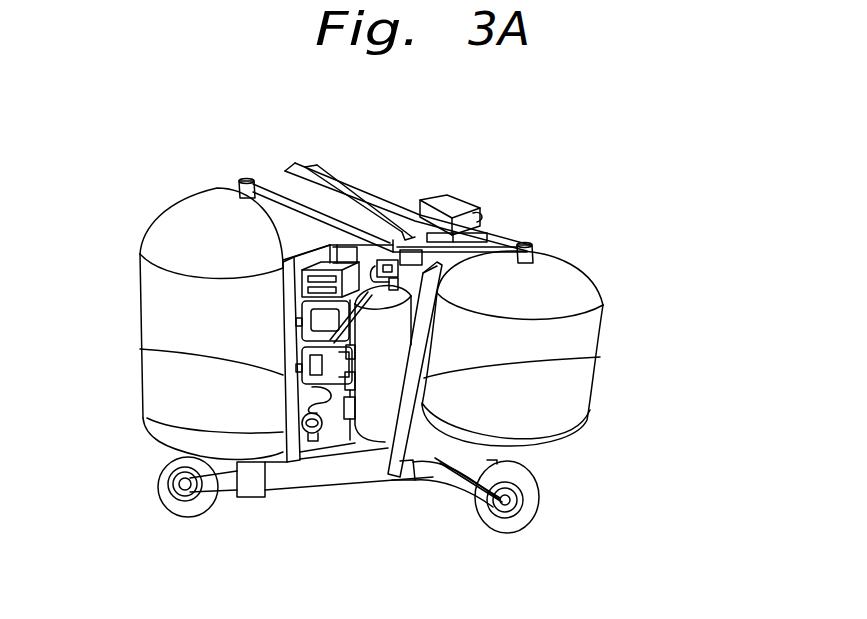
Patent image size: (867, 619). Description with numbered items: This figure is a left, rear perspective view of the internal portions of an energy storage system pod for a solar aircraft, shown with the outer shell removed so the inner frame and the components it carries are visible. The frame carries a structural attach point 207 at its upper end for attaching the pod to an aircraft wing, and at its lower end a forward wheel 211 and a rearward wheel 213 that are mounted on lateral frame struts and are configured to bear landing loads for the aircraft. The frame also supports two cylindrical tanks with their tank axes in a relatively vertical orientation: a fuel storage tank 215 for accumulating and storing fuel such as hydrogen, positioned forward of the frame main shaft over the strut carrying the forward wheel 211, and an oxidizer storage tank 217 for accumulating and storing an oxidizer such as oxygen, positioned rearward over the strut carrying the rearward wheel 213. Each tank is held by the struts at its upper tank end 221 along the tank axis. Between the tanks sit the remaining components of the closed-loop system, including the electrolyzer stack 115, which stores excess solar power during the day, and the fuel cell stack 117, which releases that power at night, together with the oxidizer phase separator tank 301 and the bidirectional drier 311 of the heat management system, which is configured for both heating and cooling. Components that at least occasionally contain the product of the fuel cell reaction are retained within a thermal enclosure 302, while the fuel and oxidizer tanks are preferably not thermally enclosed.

The electrolyzer stack 115 is at (330, 432).
The fuel cell stack 117 is at (333, 247).
The structural attach point 207 is at (440, 198).
The forward wheel 211 is at (167, 467).
The rearward wheel 213 is at (532, 518).
The fuel storage tank 215 is at (162, 212).
The oxidizer storage tank 217 is at (587, 277).
The upper tank end 221 is at (246, 181).
The oxidizer phase separator tank 301 is at (373, 433).
The thermal enclosure 302 is at (140, 349).
The bidirectional drier 311 is at (323, 183).